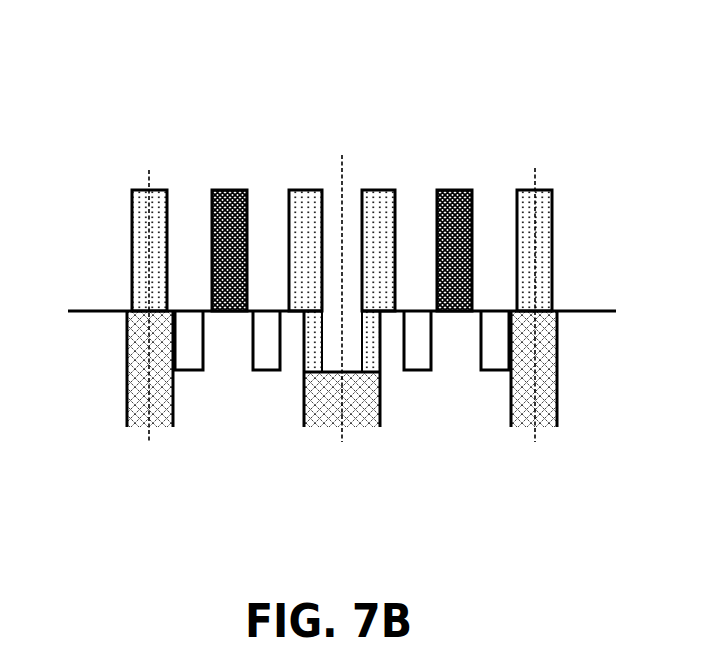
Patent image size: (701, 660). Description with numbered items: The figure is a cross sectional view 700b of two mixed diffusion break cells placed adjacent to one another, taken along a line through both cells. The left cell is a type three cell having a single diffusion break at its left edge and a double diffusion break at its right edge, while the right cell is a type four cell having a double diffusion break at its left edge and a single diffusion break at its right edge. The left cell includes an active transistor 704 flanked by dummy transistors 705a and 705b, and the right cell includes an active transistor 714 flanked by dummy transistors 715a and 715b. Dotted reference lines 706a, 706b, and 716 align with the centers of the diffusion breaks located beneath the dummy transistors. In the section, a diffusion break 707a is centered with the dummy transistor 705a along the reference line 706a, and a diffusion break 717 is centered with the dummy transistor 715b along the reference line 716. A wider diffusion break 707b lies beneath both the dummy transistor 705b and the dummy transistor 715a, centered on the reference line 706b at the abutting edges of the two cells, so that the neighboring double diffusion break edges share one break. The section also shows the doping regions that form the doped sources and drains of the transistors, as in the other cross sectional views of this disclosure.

The cross sectional view 700b is at (362, 56).
The active transistor 704 is at (223, 190).
The dummy transistor 705a is at (160, 205).
The dummy transistor 705b is at (302, 200).
The reference line 706a is at (149, 171).
The reference line 706b is at (345, 188).
The diffusion break 707a is at (135, 395).
The diffusion break 707b is at (330, 418).
The active transistor 714 is at (460, 192).
The dummy transistor 715a is at (385, 200).
The dummy transistor 715b is at (523, 205).
The reference line 716 is at (538, 172).
The diffusion break 717 is at (548, 393).